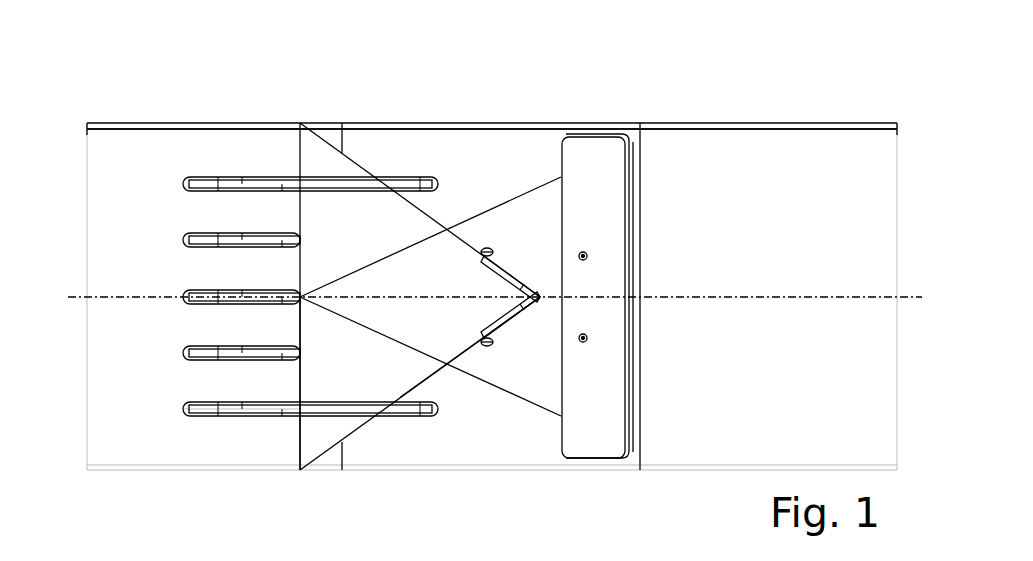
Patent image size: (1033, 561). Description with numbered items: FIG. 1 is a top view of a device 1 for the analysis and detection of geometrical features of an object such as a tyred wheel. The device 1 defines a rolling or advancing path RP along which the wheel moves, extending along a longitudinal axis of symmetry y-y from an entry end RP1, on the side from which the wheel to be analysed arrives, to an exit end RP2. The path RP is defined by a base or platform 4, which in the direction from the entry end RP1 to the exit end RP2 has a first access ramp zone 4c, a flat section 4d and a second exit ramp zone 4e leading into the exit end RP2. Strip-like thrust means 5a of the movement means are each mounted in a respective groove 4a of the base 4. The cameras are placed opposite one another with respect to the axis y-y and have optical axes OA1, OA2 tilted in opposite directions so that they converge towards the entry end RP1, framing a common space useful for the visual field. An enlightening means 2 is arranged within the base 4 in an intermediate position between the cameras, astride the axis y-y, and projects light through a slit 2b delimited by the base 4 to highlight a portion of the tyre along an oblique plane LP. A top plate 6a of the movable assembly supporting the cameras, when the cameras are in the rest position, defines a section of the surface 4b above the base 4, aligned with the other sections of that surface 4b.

The device 1 is at (698, 125).
The enlightening means 2 is at (538, 305).
The slit 2b is at (509, 262).
The base or platform 4 is at (370, 125).
The groove 4a is at (228, 412).
The surface 4b is at (525, 145).
The first access ramp zone 4c is at (252, 123).
The flat section 4d is at (447, 123).
The second exit ramp zone 4e is at (673, 125).
The thrust means 5a is at (215, 353).
The top plate 6a is at (595, 442).
The plane LP is at (357, 395).
The rolling or advancing path RP is at (413, 427).
The entry end RP1 is at (85, 187).
The exit end RP2 is at (897, 193).
The optical axis OA1 is at (484, 380).
The optical axis OA2 is at (473, 217).
The axis of symmetry y is at (495, 290).